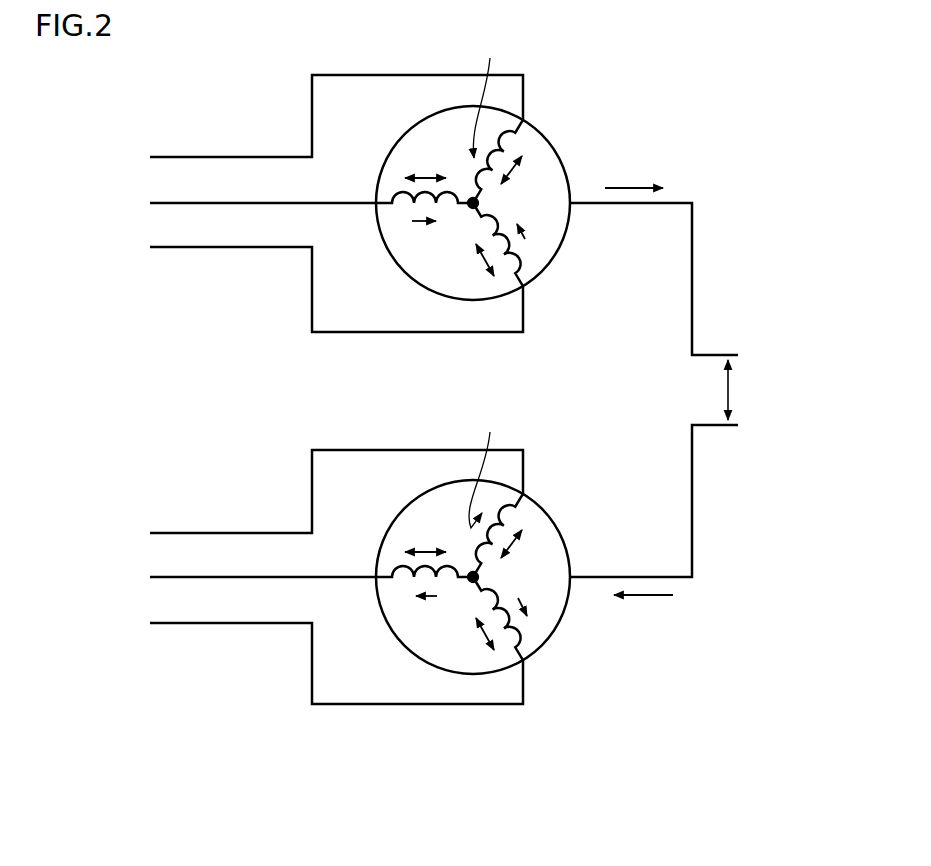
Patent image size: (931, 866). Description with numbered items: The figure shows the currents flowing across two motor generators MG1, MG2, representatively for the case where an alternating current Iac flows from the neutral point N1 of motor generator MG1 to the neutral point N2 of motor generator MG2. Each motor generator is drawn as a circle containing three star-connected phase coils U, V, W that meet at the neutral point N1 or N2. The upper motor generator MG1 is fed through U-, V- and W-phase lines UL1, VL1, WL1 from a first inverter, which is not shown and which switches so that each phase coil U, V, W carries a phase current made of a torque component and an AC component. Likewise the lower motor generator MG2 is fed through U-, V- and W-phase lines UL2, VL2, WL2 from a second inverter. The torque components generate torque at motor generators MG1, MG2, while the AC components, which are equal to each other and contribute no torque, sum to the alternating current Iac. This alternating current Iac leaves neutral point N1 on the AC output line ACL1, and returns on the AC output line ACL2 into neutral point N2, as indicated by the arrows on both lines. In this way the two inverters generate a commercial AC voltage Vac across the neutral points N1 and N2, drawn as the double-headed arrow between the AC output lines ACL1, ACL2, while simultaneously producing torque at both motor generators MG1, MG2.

The motor generator MG1 is at (392, 152).
The motor generator MG2 is at (392, 526).
The U-phase line UL1 is at (204, 157).
The V-phase line VL1 is at (204, 203).
The W-phase line WL1 is at (204, 247).
The U-phase line UL2 is at (204, 533).
The V-phase line VL2 is at (204, 577).
The W-phase line WL2 is at (204, 623).
The U-phase coil U is at (414, 377).
The V-phase coil V is at (507, 338).
The W-phase coil W is at (502, 450).
The neutral point N1 is at (471, 207).
The neutral point N2 is at (471, 581).
The AC output line ACL1 is at (694, 258).
The AC output line ACL2 is at (694, 477).
The alternating current Iac is at (639, 393).
The commercial AC voltage Vac is at (752, 390).